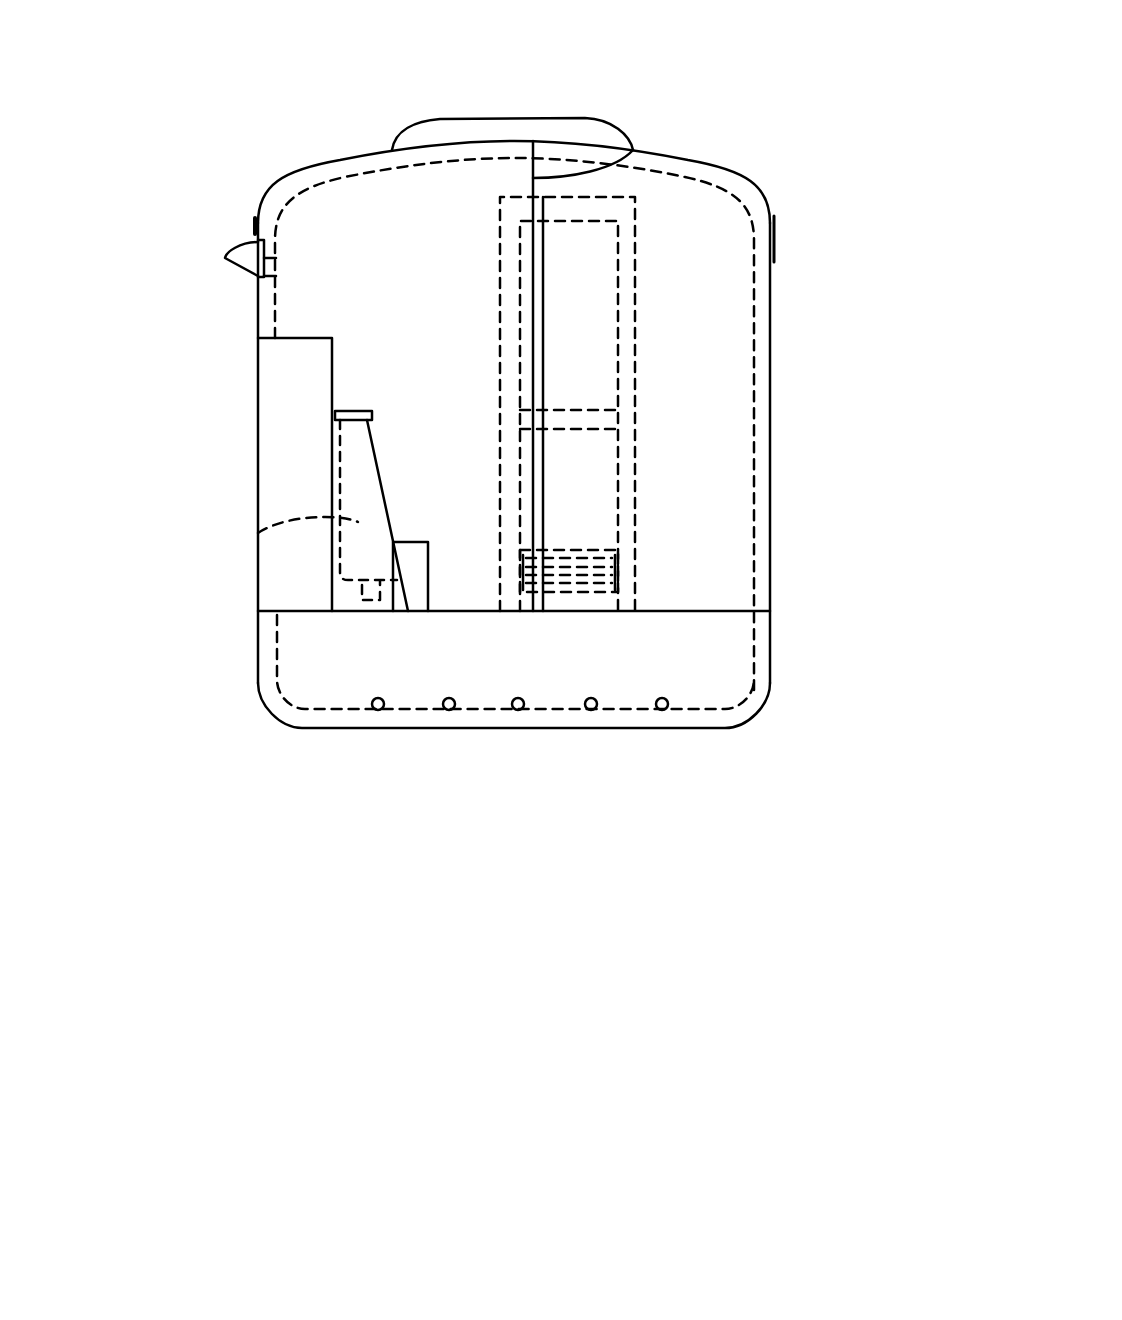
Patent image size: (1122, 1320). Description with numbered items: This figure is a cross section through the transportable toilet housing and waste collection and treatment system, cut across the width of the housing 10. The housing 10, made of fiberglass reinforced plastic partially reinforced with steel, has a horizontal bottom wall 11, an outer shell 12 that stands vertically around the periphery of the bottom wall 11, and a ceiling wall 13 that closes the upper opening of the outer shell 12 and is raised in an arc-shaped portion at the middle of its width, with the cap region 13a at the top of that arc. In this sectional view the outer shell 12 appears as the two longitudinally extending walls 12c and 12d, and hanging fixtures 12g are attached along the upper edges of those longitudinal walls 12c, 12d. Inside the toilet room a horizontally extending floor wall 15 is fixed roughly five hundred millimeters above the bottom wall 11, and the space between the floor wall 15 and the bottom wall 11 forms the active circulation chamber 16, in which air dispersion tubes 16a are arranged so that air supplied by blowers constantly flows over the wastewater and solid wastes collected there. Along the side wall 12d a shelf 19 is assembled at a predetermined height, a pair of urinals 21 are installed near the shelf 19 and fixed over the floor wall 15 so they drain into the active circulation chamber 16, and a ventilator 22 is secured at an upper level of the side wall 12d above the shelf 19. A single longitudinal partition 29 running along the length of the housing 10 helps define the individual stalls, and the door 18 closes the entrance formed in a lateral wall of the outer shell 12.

The housing 10 is at (322, 165).
The bottom wall 11 is at (730, 728).
The outer shell 12 is at (792, 347).
The longitudinally extending wall 12c is at (770, 450).
The longitudinally extending wall 12d is at (258, 326).
The hanging fixtures 12g is at (254, 228).
The ceiling wall 13 is at (273, 202).
The cap 13a is at (515, 118).
The floor wall 15 is at (700, 611).
The active circulation chamber 16 is at (750, 653).
The air dispersion tubes 16a is at (449, 711).
The door 18 is at (600, 357).
The shelf 19 is at (285, 422).
The urinals 21 is at (258, 533).
The ventilator 22 is at (240, 262).
The longitudinal partition 29 is at (533, 178).